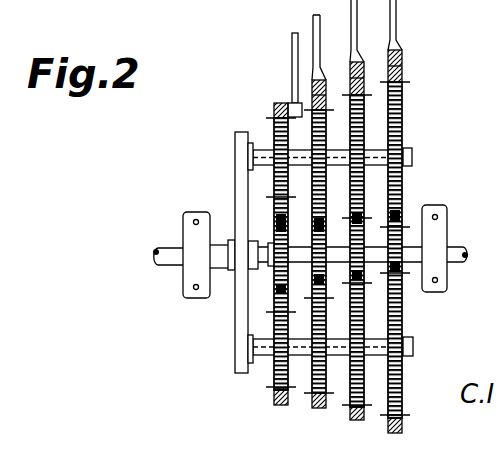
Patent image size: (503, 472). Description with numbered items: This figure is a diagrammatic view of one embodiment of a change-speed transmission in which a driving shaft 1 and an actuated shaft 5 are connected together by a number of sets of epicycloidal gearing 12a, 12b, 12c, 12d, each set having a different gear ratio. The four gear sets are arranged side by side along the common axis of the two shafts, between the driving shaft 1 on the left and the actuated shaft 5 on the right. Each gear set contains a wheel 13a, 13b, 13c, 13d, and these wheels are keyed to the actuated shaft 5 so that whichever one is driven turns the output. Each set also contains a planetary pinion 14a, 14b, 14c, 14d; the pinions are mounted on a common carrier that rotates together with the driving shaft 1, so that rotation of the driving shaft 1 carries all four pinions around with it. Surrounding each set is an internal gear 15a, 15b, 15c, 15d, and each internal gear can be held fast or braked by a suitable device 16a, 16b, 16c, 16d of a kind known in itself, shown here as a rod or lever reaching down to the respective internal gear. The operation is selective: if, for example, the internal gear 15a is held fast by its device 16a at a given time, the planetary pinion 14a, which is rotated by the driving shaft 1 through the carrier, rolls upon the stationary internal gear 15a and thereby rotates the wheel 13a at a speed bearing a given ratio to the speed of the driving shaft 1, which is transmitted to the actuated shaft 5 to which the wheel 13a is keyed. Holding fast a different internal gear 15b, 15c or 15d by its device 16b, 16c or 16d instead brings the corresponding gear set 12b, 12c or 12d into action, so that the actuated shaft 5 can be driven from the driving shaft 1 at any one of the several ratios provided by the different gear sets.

The driving shaft 1 is at (172, 257).
The actuated shaft 5 is at (456, 245).
The set of epicycloidal gearing 12a is at (282, 223).
The set of epicycloidal gearing 12b is at (318, 226).
The set of epicycloidal gearing 12c is at (356, 217).
The set of epicycloidal gearing 12d is at (394, 216).
The wheel 13a is at (278, 289).
The wheel 13b is at (319, 278).
The wheel 13c is at (358, 274).
The wheel 13d is at (403, 268).
The planetary pinion 14a is at (277, 131).
The planetary pinion 14b is at (313, 138).
The planetary pinion 14c is at (350, 138).
The planetary pinion 14d is at (400, 117).
The internal gear 15a is at (283, 405).
The internal gear 15b is at (318, 408).
The internal gear 15c is at (353, 418).
The internal gear 15d is at (403, 422).
The holding or braking device 16a is at (296, 55).
The holding or braking device 16b is at (316, 52).
The holding or braking device 16c is at (354, 40).
The holding or braking device 16d is at (393, 33).